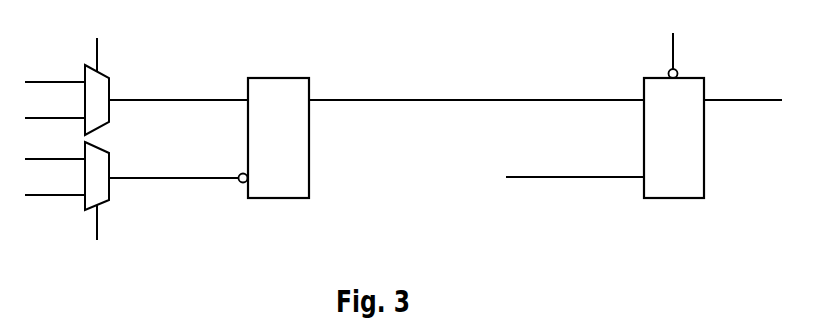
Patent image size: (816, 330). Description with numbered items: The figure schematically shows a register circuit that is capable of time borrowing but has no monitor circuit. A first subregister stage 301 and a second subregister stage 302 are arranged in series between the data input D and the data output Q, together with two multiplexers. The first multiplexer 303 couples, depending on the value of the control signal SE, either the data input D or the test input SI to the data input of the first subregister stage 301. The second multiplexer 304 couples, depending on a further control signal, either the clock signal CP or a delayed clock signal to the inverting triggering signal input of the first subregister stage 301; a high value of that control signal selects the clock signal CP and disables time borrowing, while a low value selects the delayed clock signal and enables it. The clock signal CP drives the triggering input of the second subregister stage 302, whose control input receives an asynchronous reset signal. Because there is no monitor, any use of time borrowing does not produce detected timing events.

The first subregister stage 301 is at (309, 160).
The second subregister stage 302 is at (704, 172).
The first multiplexer 303 is at (111, 108).
The second multiplexer 304 is at (111, 188).